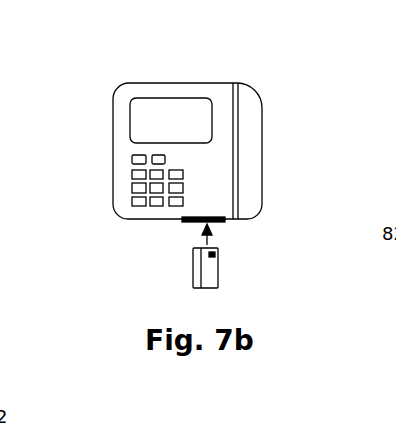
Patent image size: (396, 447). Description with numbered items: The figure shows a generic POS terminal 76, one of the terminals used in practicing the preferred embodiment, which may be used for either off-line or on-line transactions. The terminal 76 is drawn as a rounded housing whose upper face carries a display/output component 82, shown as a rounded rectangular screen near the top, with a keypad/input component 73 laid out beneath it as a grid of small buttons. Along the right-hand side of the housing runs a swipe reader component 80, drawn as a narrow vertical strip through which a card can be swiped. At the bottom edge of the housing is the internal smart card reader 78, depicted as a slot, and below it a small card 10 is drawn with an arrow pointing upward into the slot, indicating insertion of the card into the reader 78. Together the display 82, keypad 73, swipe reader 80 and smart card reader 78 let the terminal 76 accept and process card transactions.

The card 10 is at (218, 274).
The keypad/input component 73 is at (132, 188).
The POS terminal 76 is at (262, 142).
The internal smart card reader 78 is at (183, 221).
The swipe reader component 80 is at (233, 84).
The display/output component 82 is at (132, 118).